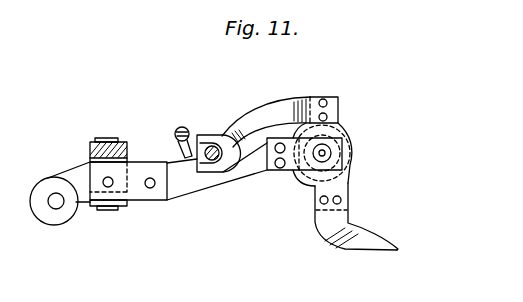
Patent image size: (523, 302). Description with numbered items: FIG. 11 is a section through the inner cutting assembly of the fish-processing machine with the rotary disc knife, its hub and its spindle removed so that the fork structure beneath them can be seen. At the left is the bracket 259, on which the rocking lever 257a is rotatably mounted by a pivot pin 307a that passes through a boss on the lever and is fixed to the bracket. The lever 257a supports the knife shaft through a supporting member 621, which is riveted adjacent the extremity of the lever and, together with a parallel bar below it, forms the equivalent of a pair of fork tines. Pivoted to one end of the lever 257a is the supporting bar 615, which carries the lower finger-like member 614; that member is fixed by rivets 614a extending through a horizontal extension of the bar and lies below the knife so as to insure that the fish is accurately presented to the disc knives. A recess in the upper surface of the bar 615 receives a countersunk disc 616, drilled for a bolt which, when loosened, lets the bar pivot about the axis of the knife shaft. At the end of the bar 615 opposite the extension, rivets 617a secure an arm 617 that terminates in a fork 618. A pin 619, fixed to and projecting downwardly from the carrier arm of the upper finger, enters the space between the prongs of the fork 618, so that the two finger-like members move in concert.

The bracket 259 is at (93, 142).
The lever 257a is at (147, 189).
The pivot pin 307a is at (105, 210).
The fork 618 is at (198, 137).
The pin 619 is at (207, 163).
The arm 617 is at (282, 108).
The rivets 617a is at (330, 117).
The disc 616 is at (341, 134).
The supporting member 621 is at (332, 150).
The supporting bar 615 is at (342, 183).
The rivets 614a is at (347, 201).
The finger-like member 614 is at (362, 230).